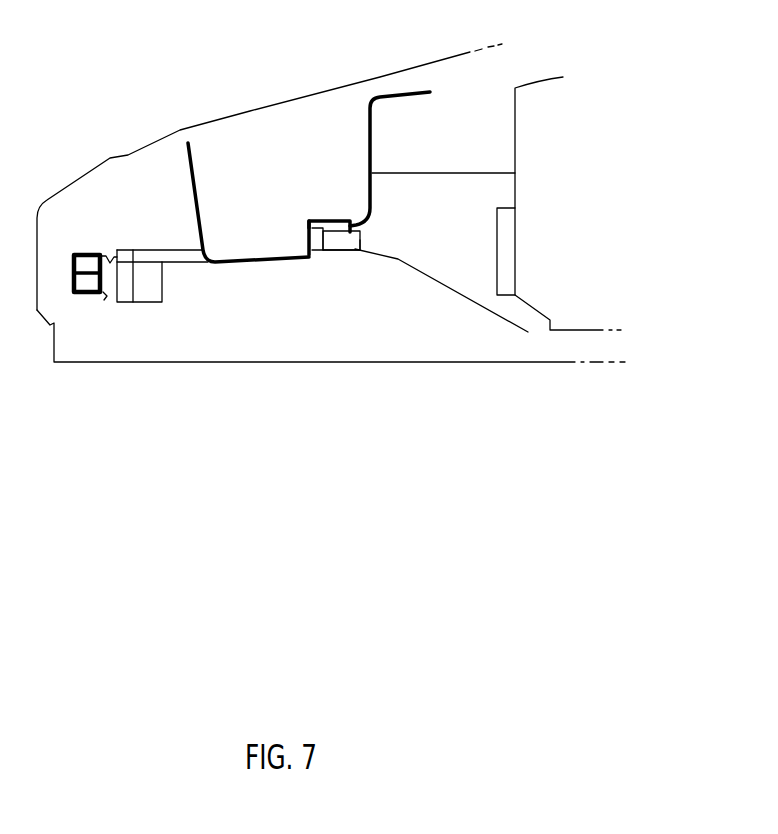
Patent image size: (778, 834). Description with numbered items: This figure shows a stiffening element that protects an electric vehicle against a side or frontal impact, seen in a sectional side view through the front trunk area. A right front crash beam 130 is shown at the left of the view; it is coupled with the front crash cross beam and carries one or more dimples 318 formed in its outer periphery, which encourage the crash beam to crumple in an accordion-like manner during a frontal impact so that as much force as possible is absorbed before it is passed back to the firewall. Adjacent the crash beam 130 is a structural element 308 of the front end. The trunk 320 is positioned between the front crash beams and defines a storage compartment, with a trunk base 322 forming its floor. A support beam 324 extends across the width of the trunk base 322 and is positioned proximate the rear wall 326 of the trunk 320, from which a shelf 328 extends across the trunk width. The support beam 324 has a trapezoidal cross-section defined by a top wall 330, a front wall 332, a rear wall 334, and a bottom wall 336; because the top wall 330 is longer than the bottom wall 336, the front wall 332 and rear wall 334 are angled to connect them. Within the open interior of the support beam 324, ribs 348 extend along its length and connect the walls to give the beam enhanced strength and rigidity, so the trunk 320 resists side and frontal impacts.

The right front crash beam 130 is at (114, 250).
The hinge 308 is at (83, 252).
The dimples 318 is at (105, 295).
The trunk 320 is at (238, 147).
The trunk base 322 is at (262, 265).
The support beam 324 is at (308, 222).
The rear wall 326 is at (367, 145).
The shelf 328 is at (365, 250).
The top wall 330 is at (313, 218).
The front wall 332 is at (307, 238).
The rear wall 334 is at (330, 260).
The bottom wall 336 is at (313, 255).
The ribs 348 is at (356, 226).